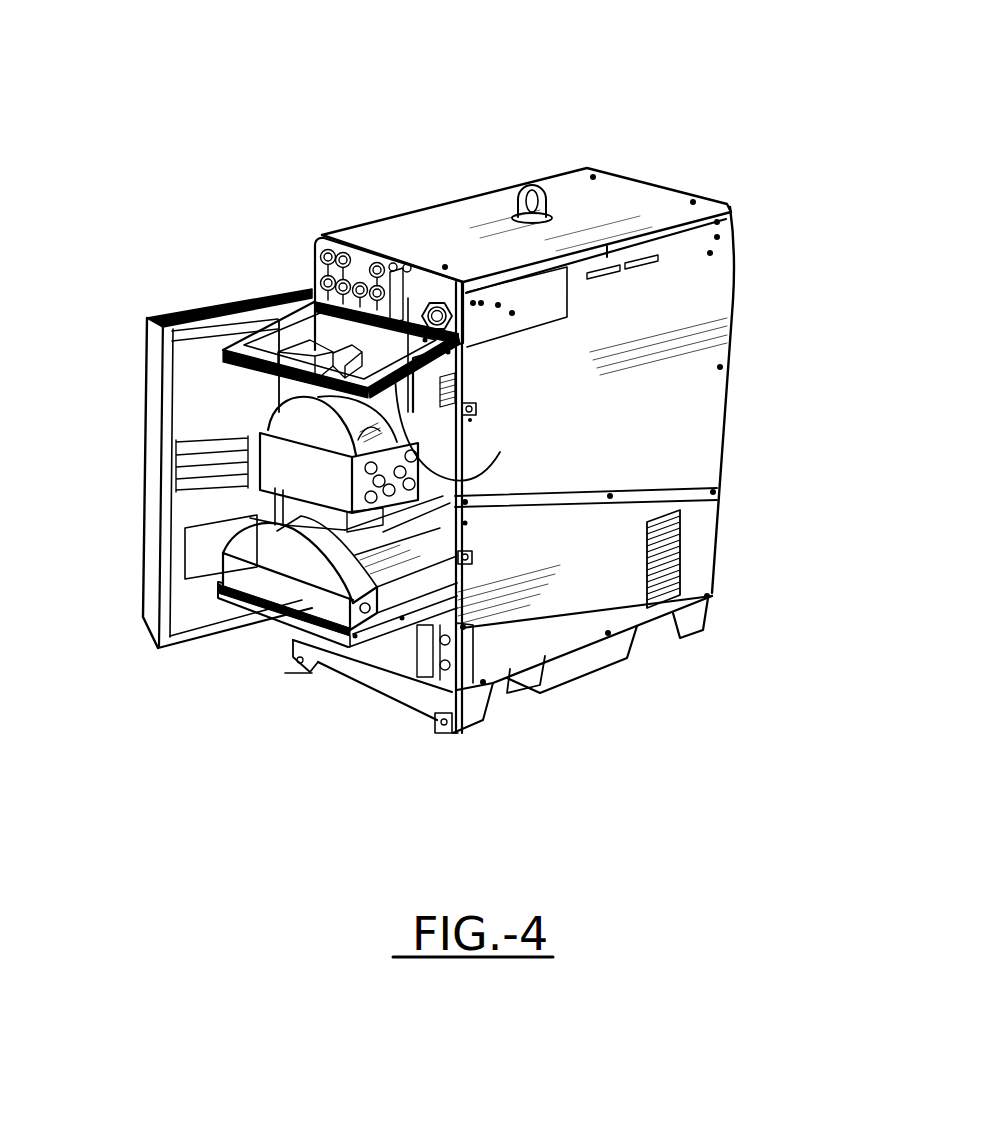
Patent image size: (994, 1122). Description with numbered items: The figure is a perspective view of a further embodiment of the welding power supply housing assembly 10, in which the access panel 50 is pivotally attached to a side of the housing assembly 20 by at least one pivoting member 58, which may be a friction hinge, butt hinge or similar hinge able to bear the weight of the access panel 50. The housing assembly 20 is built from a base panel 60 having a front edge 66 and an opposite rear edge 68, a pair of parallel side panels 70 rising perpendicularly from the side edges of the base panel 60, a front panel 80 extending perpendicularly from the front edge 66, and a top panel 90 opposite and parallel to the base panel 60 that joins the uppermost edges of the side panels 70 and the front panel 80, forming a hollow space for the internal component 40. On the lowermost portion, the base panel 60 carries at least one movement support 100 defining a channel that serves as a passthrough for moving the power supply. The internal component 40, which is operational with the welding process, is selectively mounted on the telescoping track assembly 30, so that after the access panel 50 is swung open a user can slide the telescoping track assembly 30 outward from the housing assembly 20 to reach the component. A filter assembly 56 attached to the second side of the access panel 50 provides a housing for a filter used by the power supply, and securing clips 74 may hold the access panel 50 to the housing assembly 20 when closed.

The welding power supply housing assembly 10 is at (172, 125).
The housing assembly 20 is at (756, 206).
The telescoping track assembly 30 is at (396, 358).
The internal component 40 is at (400, 530).
The access panel 50 is at (137, 623).
The filter assembly 56 is at (141, 437).
The pivoting member 58 is at (304, 295).
The base panel 60 is at (619, 688).
The front edge 66 is at (721, 608).
The rear edge 68 is at (376, 671).
The side panel 70 is at (651, 400).
The securing clip 74 is at (473, 403).
The front panel 80 is at (737, 412).
The top panel 90 is at (502, 228).
The movement support 100 is at (512, 699).